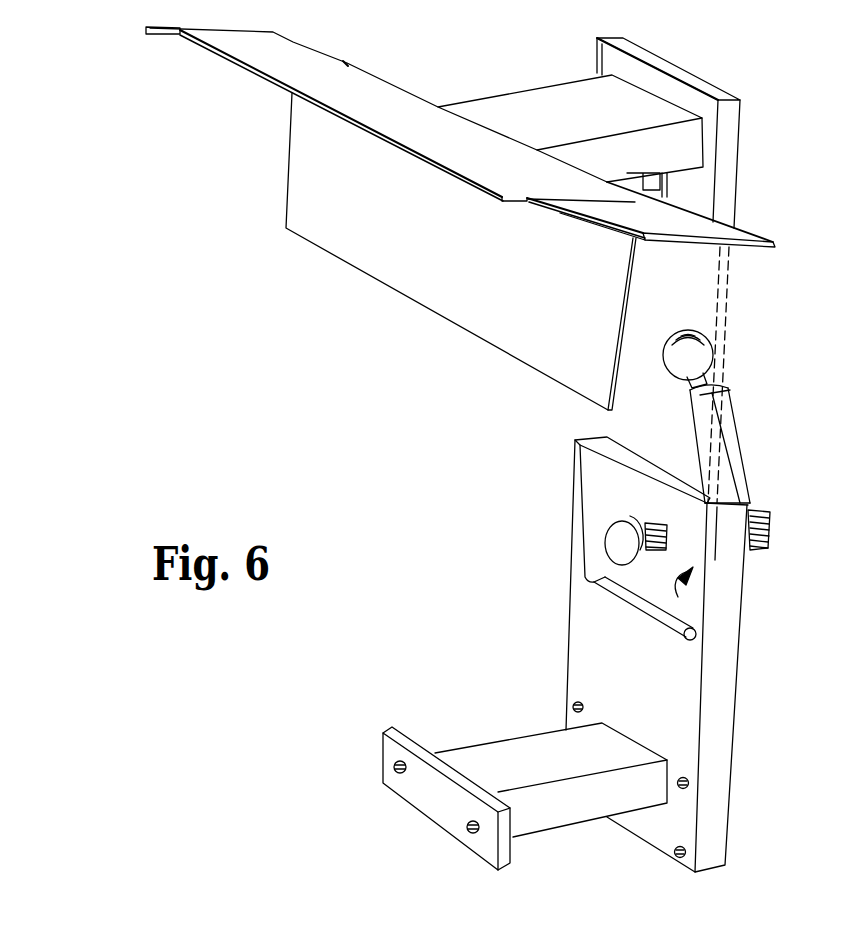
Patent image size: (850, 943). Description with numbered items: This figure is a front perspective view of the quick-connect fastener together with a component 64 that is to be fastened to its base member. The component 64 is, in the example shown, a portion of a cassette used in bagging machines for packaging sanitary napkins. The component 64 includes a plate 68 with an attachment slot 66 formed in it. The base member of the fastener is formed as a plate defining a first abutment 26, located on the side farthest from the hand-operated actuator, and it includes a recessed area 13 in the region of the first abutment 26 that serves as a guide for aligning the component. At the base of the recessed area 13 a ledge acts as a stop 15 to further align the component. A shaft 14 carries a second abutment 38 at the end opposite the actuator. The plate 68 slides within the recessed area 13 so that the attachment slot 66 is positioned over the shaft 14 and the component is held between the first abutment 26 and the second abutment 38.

The recessed area 13 is at (700, 600).
The shaft 14 is at (647, 517).
The stop 15 is at (667, 612).
The first abutment 26 is at (638, 580).
The second abutment 38 is at (620, 522).
The component 64 is at (236, 223).
The attachment slot 66 is at (660, 195).
The plate 68 is at (705, 144).